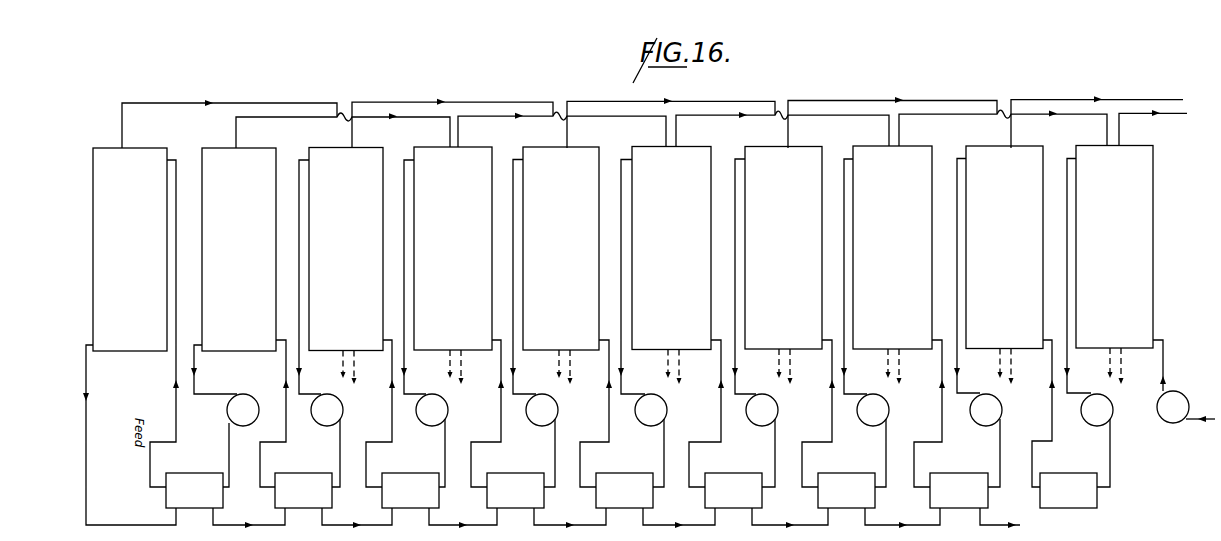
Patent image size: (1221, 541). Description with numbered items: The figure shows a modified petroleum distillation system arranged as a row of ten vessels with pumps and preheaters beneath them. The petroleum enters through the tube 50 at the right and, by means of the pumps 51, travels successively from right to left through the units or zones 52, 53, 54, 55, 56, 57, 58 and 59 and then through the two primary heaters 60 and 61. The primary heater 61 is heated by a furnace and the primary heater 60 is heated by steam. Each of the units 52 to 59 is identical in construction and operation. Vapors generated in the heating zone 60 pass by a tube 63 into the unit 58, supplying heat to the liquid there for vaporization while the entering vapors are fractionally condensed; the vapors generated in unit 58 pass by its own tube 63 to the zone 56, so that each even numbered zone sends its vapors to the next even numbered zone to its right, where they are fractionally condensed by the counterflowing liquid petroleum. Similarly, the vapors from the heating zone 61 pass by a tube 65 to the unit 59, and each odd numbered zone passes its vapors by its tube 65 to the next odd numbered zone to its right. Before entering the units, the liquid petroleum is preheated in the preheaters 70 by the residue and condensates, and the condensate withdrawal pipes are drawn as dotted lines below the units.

The tube 50 is at (1196, 417).
The pumps 51 is at (245, 401).
The unit or zone 52 is at (1114, 247).
The unit or zone 53 is at (1004, 247).
The unit or zone 54 is at (892, 247).
The unit or zone 55 is at (783, 248).
The unit or zone 56 is at (671, 248).
The unit or zone 57 is at (561, 248).
The unit or zone 58 is at (453, 248).
The unit or zone 59 is at (346, 249).
The primary heater 60 is at (239, 249).
The primary heater 61 is at (130, 249).
The tube 63 is at (279, 118).
The tube 65 is at (172, 101).
The preheaters 70 is at (631, 490).